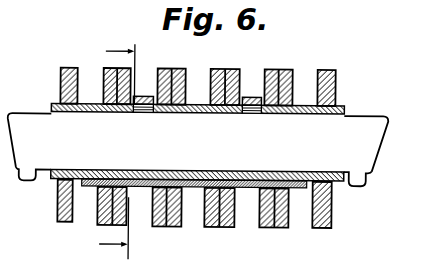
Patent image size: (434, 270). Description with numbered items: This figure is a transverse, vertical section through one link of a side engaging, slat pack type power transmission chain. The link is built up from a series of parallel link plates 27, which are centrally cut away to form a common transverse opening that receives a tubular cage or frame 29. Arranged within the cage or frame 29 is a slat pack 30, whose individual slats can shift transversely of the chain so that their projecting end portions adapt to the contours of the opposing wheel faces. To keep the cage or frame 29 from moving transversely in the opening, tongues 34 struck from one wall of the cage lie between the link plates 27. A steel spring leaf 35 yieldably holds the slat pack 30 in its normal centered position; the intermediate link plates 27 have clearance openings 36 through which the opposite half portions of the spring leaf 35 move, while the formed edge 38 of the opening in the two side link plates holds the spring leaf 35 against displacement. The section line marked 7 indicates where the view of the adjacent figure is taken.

The section line 7- 7 is at (123, 152).
The link plate 27 is at (213, 228).
The cage or frame 29 is at (51, 103).
The slat pack 30 is at (14, 173).
The tongue 34 is at (143, 97).
The steel spring leaf 35 is at (300, 192).
The clearance opening 36 is at (262, 193).
The edge of opening 38 is at (57, 186).